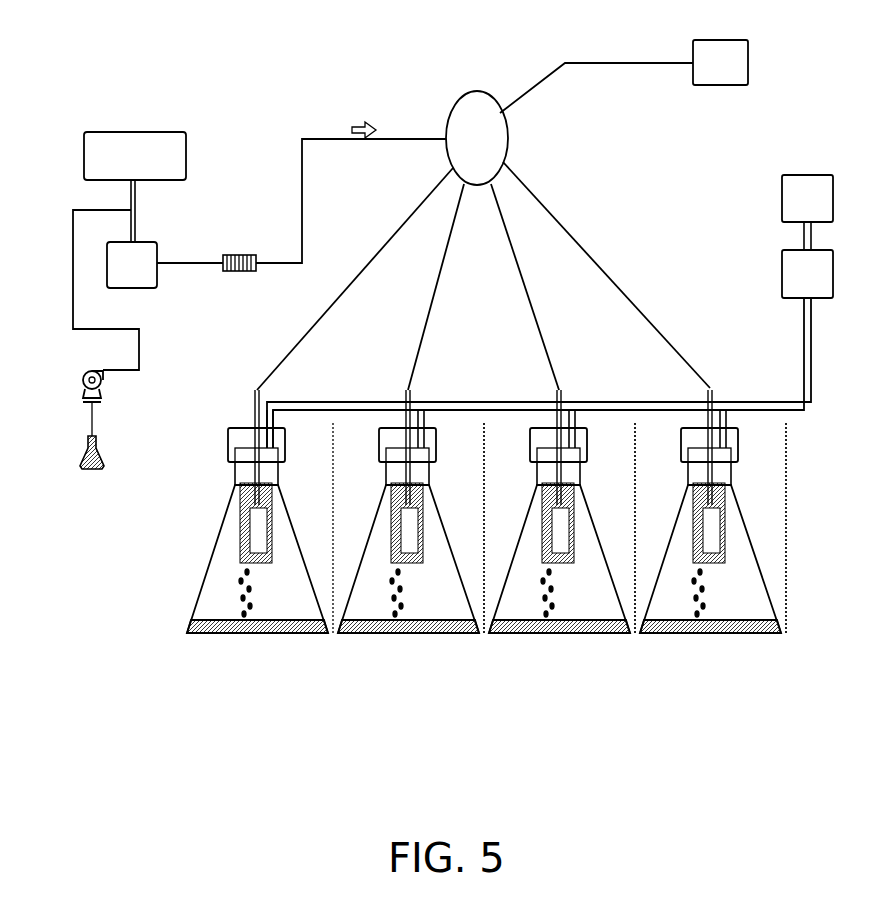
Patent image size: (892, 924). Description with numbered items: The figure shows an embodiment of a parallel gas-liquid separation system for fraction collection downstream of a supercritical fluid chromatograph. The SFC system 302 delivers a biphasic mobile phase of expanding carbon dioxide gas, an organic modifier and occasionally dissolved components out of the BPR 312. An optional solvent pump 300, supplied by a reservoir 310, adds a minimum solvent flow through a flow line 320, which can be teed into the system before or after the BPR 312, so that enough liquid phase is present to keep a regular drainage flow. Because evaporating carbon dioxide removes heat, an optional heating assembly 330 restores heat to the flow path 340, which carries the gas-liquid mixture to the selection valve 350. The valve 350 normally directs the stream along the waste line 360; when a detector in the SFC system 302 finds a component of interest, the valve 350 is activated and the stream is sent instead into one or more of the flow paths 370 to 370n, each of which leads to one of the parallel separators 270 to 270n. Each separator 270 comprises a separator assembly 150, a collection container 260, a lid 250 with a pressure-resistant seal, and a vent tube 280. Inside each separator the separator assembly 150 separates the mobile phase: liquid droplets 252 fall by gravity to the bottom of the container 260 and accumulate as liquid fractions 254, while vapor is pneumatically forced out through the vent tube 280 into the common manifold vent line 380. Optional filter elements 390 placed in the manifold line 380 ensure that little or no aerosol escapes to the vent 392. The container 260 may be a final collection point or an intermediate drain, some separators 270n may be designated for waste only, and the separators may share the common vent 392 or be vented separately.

The separator assembly 150 is at (240, 542).
The lid 250 is at (228, 441).
The liquid droplets 252 is at (246, 586).
The liquid fractions 254 is at (258, 640).
The collection container 260 is at (200, 586).
The parallel separator 270 is at (333, 520).
The nth parallel separator 270n is at (786, 520).
The vent tube 280 is at (280, 428).
The solvent pump 300 is at (82, 376).
The SFC system 302 is at (140, 132).
The reservoir 310 is at (104, 455).
The BPR 312 is at (152, 243).
The flow line 320 is at (73, 268).
The heating assembly 330 is at (241, 255).
The flow path 340 is at (400, 139).
The valve 350 is at (485, 92).
The waste line 360 is at (608, 63).
The flow path 370 is at (320, 326).
The nth flow path 370n is at (590, 256).
The manifold vent line 380 is at (470, 402).
The filter element 390 is at (820, 300).
The vent 392 is at (812, 175).